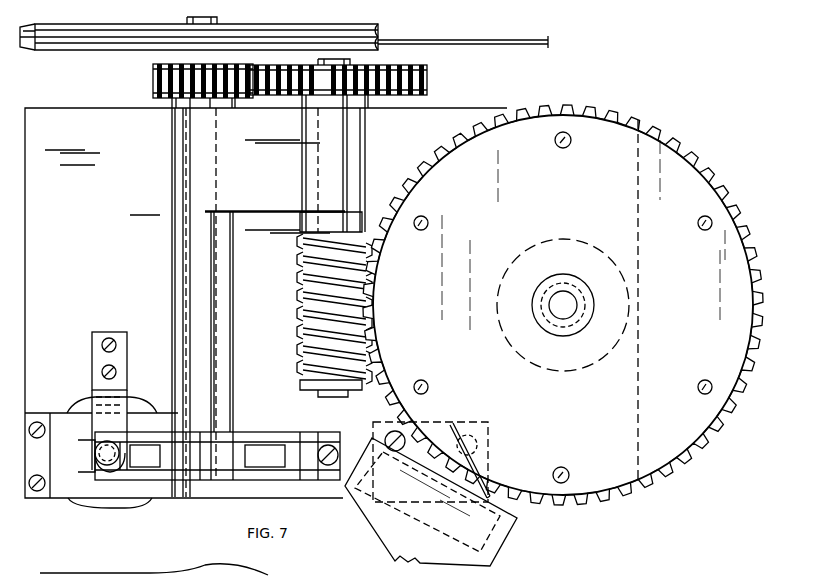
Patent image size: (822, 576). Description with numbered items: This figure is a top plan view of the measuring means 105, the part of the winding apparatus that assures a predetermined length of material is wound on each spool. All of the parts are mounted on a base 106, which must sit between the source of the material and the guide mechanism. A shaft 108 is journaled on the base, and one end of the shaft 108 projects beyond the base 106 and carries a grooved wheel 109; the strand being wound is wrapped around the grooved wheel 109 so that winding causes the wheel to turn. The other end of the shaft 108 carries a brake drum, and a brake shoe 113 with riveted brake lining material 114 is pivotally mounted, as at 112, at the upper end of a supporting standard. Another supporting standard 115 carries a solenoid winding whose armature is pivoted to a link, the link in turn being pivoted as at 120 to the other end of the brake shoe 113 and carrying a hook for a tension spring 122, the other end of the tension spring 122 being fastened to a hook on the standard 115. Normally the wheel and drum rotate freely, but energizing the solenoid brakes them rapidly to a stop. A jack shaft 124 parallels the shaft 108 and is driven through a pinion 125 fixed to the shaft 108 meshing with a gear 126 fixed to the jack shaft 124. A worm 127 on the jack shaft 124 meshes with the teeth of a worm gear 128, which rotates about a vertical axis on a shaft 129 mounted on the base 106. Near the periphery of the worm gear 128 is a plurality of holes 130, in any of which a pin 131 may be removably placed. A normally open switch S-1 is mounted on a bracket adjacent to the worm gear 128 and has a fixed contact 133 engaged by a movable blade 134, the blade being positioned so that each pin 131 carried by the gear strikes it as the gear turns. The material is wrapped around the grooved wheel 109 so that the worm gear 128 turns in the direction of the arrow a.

The measuring means 105 is at (563, 262).
The base 106 is at (72, 120).
The shaft 108 is at (230, 358).
The grooved wheel 109 is at (360, 24).
The pivot 112 is at (322, 440).
The brake shoe 113 is at (246, 436).
The brake lining material 114 is at (240, 412).
The supporting standard 115 is at (122, 362).
The pivot 120 is at (128, 440).
The tension spring 122 is at (96, 462).
The jack shaft 124 is at (350, 153).
The pinion 125 is at (153, 78).
The gear 126 is at (430, 86).
The worm 127 is at (305, 382).
The worm gear 128 is at (690, 187).
The shaft 129 is at (563, 300).
The holes 130 is at (428, 220).
The pin 131 is at (562, 148).
The fixed contact 133 is at (470, 490).
The movable blade 134 is at (456, 428).
The normally open switch S-1 is at (450, 486).
The arrow a is at (768, 235).